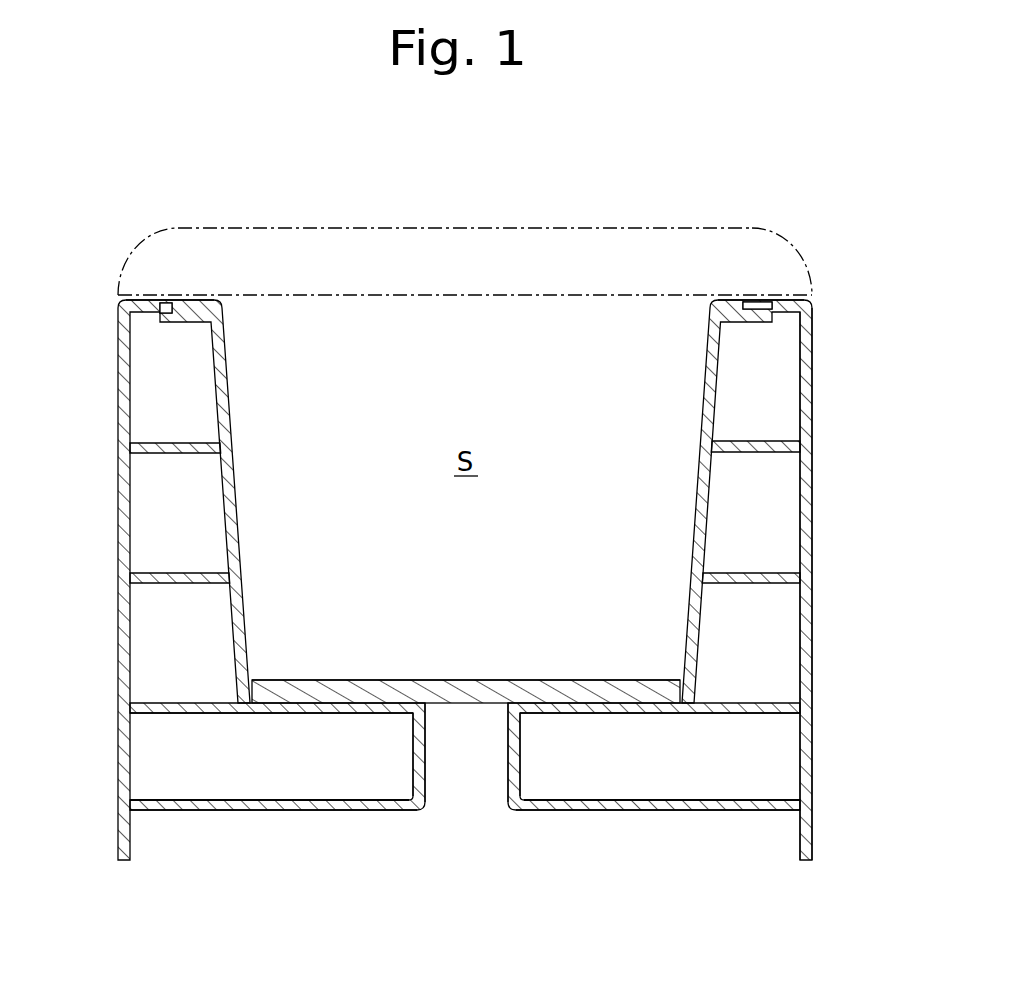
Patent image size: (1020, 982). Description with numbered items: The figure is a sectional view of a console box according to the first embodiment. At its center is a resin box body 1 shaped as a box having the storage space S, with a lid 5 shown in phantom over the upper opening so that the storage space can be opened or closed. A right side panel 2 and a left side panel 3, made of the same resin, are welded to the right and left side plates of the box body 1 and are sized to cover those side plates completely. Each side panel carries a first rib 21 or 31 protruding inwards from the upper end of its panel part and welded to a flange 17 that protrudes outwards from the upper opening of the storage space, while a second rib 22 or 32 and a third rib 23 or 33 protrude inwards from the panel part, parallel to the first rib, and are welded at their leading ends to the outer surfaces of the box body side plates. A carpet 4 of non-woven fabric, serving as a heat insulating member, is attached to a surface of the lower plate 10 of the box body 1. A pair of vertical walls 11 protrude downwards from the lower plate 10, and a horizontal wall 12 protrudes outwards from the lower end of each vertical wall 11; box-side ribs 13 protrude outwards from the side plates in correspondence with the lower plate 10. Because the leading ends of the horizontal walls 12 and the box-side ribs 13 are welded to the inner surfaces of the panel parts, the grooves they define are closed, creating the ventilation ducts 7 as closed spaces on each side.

The box body 1 is at (708, 405).
The right side panel 2 is at (808, 392).
The left side panel 3 is at (125, 510).
The carpet 4 is at (343, 683).
The lid 5 is at (510, 242).
The ventilation duct 7 is at (284, 767).
The lower plate 10 is at (556, 685).
The vertical wall 11 is at (425, 763).
The horizontal wall 12 is at (280, 811).
The box-side rib 13 is at (210, 703).
The flange 17 is at (205, 303).
The first rib 21 is at (784, 302).
The second rib 22 is at (757, 443).
The third rib 23 is at (746, 575).
The first rib 31 is at (152, 303).
The second rib 32 is at (178, 445).
The third rib 33 is at (180, 578).